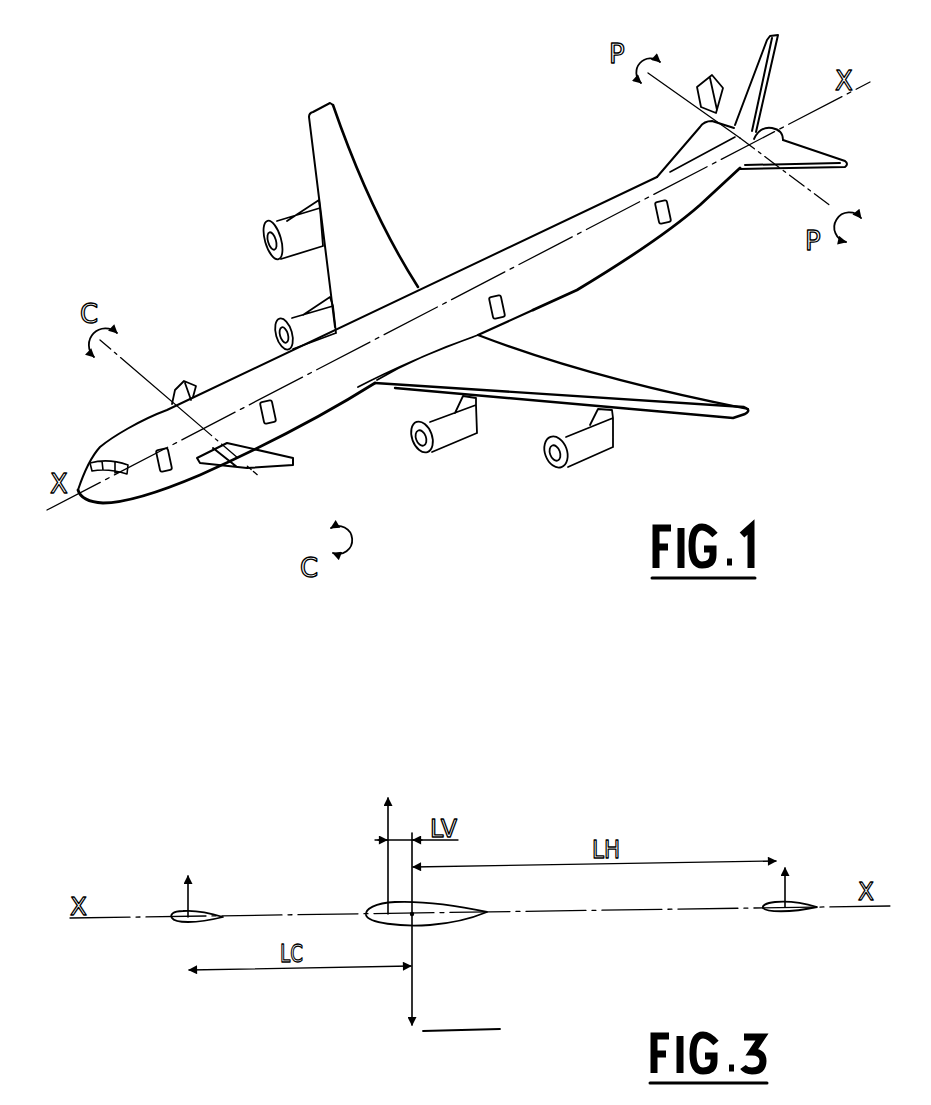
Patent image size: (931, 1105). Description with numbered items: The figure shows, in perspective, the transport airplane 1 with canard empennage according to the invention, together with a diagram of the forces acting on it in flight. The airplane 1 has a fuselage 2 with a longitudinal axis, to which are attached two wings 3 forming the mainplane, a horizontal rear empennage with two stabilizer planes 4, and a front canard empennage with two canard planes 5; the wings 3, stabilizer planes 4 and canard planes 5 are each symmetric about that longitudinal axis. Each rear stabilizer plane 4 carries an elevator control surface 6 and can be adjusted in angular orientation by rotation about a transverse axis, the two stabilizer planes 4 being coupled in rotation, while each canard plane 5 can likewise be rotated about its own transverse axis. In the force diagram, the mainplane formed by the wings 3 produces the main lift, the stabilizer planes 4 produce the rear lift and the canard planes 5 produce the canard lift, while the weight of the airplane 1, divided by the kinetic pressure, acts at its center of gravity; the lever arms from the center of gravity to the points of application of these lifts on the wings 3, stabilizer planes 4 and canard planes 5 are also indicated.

In FIG. 1, the transport airplane 1 is at (205, 213).
In FIG. 1, the fuselage 2 is at (528, 240).
In FIG. 1, the wing 3 is at (347, 183).
In FIG. 3, the wing 3 is at (453, 906).
In FIG. 1, the rear stabilizer plane 4 is at (703, 100).
In FIG. 3, the rear stabilizer plane 4 is at (773, 917).
In FIG. 1, the front canard plane 5 is at (183, 380).
In FIG. 3, the front canard plane 5 is at (178, 925).
In FIG. 1, the elevator control surface 6 is at (723, 77).